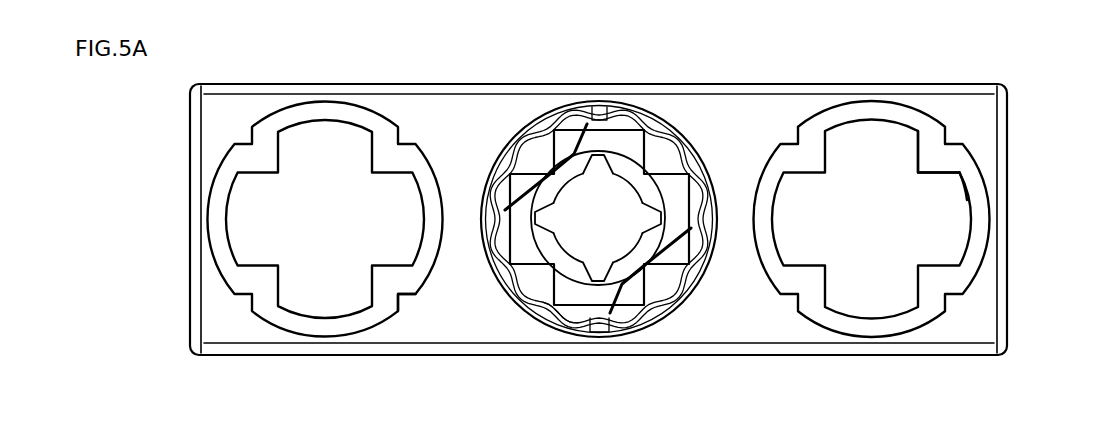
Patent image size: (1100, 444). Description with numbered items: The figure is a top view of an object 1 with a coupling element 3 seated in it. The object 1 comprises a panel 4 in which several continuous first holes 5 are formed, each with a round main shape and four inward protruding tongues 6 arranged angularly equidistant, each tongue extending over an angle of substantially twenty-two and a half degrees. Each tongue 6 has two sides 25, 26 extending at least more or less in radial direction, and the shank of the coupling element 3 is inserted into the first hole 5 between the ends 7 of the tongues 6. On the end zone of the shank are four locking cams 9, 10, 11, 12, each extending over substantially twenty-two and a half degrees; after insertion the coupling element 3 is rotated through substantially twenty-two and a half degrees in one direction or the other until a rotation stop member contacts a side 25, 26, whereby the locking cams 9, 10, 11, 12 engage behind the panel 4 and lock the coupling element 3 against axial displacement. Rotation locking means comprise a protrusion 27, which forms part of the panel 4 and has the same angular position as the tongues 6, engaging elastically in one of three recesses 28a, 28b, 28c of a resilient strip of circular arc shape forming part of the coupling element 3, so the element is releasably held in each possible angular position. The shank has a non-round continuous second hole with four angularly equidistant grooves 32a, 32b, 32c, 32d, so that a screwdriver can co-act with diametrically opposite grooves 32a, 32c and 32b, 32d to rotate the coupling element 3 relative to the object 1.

The object 1 is at (938, 355).
The coupling element 3 is at (629, 341).
The panel 4 is at (782, 327).
The first hole 5 is at (303, 212).
The tongues 6 is at (395, 288).
The ends of the tongues 7 is at (913, 267).
The locking cam 9 is at (513, 222).
The locking cam 10 is at (585, 302).
The locking cam 11 is at (658, 223).
The locking cam 12 is at (607, 140).
The side of tongue 25 is at (912, 162).
The side of tongue 26 is at (943, 175).
The protrusion 27 is at (407, 300).
The recess 28a is at (492, 257).
The recess 28b is at (513, 297).
The recess 28c is at (575, 325).
The groove 32a is at (600, 165).
The groove 32b is at (543, 192).
The groove 32c is at (598, 273).
The groove 32d is at (660, 172).